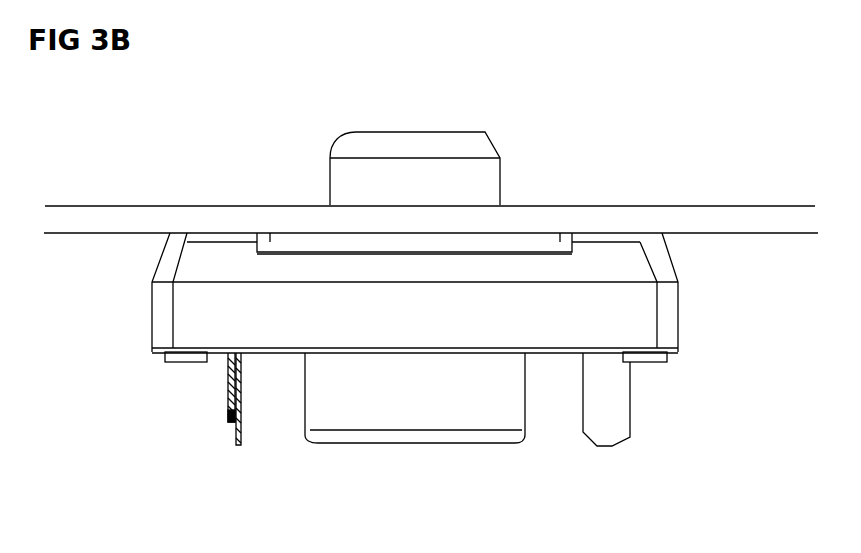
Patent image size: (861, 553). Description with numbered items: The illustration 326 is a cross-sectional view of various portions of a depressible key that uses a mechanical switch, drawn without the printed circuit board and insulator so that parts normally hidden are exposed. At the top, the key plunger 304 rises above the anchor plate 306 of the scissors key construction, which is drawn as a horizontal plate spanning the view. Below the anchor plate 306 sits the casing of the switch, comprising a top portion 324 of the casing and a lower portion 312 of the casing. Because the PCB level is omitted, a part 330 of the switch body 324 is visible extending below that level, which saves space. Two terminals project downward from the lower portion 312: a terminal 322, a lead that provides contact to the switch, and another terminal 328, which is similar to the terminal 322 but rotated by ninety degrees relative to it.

The key plunger 304 is at (468, 178).
The anchor plate 306 is at (703, 214).
The lower portion of casing 312 is at (167, 313).
The terminal 322 is at (600, 418).
The top portion of casing 324 is at (335, 302).
The illustration 326 is at (728, 105).
The terminal 328 is at (230, 418).
The part of switch body 330 is at (430, 428).